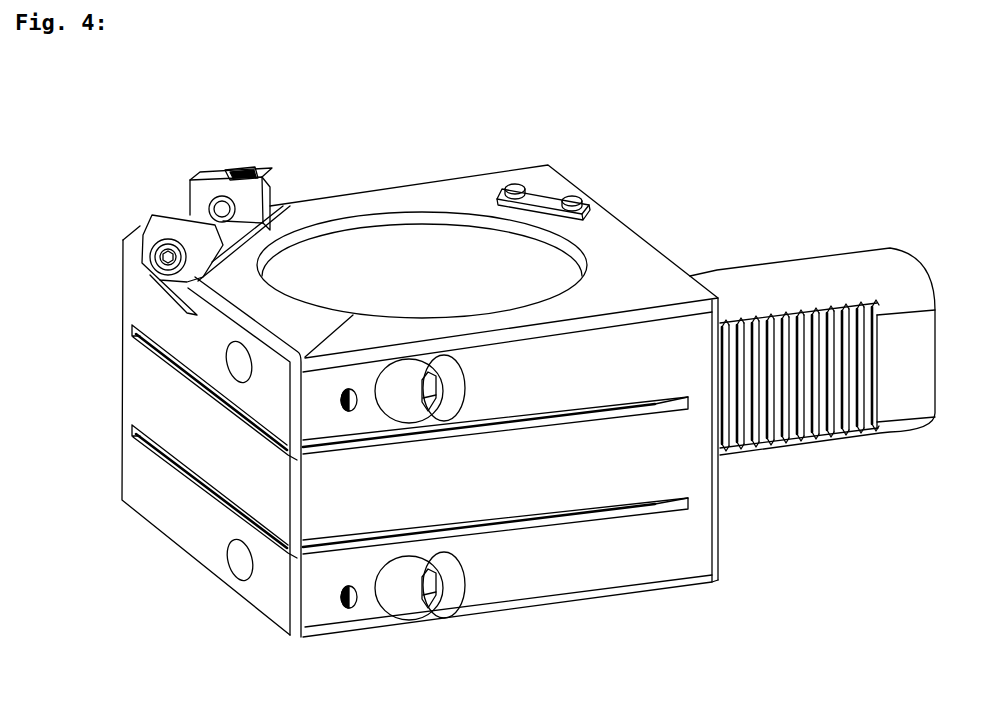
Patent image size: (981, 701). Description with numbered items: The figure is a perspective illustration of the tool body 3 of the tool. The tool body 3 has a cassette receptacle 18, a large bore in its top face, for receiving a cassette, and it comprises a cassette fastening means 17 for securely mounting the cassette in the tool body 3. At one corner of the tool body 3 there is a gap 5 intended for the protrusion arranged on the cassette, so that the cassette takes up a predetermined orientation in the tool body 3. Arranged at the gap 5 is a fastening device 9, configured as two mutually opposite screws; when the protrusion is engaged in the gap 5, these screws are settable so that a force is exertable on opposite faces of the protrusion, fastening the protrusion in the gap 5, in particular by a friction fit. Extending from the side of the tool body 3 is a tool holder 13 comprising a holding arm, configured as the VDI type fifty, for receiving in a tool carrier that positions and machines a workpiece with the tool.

The tool body 3 is at (123, 372).
The gap 5 is at (290, 204).
The fastening device 9 is at (155, 218).
The tool holder 13 is at (830, 253).
The cassette fastening means 17 is at (437, 593).
The cassette receptacle 18 is at (433, 247).